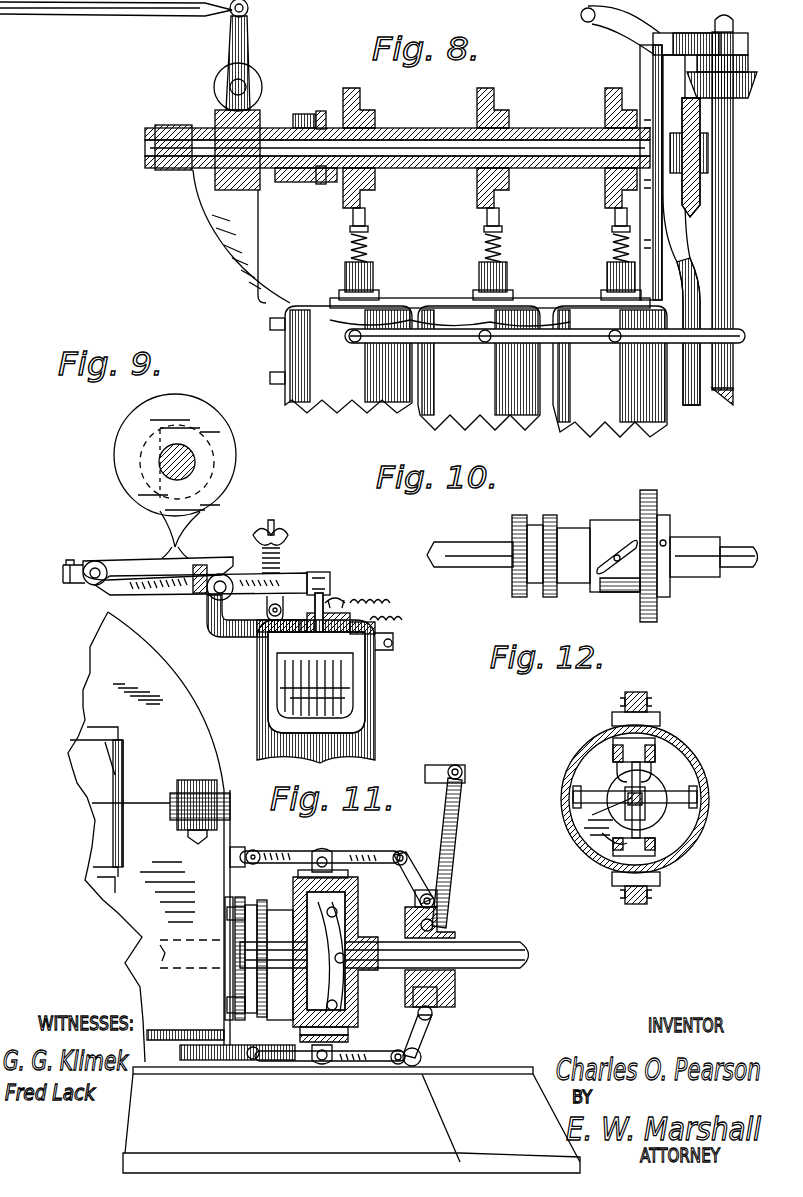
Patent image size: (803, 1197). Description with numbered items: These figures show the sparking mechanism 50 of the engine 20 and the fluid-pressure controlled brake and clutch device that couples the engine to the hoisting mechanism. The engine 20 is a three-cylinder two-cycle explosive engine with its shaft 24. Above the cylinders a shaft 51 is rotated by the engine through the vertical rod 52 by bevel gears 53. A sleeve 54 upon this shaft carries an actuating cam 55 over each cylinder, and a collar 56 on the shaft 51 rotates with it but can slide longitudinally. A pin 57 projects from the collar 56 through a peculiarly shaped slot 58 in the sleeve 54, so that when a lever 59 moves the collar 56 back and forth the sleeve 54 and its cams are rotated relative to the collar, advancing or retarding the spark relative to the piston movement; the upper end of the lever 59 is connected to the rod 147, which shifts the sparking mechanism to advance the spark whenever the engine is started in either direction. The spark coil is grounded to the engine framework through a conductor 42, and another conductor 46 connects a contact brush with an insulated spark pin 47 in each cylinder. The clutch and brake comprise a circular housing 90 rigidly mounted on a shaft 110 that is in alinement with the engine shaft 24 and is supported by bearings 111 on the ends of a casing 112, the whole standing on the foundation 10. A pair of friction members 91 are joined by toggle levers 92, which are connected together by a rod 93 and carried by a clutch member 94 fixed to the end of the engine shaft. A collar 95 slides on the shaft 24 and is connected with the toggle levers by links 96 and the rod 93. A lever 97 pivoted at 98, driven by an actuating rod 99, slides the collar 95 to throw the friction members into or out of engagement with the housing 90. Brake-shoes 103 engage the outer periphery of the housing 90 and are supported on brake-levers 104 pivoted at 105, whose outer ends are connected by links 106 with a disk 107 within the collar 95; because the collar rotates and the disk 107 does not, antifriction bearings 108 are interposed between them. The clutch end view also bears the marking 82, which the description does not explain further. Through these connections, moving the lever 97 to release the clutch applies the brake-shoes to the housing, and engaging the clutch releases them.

In FIG. 11, the foundation 10 is at (480, 1088).
In FIG. 8, the explosive or internal combustion engine 20 is at (305, 335).
In FIG. 11, the shaft of the engine 24 is at (500, 945).
In FIG. 8, the conductor 42 is at (545, 300).
In FIG. 9, the conductor 42 is at (385, 622).
In FIG. 8, the conductor 46 is at (416, 215).
In FIG. 9, the conductor 46 is at (360, 602).
In FIG. 9, the insulated spark pin 47 is at (333, 600).
In FIG. 8, the sparking mechanism 50 is at (312, 74).
In FIG. 8, the shaft 51 is at (540, 140).
In FIG. 10, the shaft 51 is at (445, 548).
In FIG. 8, the vertical rod 52 is at (735, 262).
In FIG. 8, the bevel gears 53 is at (708, 112).
In FIG. 8, the sleeve 54 is at (412, 136).
In FIG. 10, the sleeve 54 is at (705, 545).
In FIG. 8, the actuating cam 55 is at (357, 196).
In FIG. 9, the actuating cam 55 is at (130, 498).
In FIG. 10, the actuating cam 55 is at (656, 520).
In FIG. 8, the collar 56 is at (273, 172).
In FIG. 10, the collar 56 is at (540, 548).
In FIG. 8, the pin 57 is at (321, 111).
In FIG. 10, the pin 57 is at (610, 540).
In FIG. 8, the slot 58 is at (303, 114).
In FIG. 10, the slot 58 is at (598, 572).
In FIG. 8, the lever 59 is at (232, 42).
In FIG. 12, the shaft 82 is at (620, 840).
In FIG. 12, the circular housing 90 is at (580, 756).
In FIG. 11, the circular housing 90 is at (298, 882).
In FIG. 12, the friction members 91 is at (655, 790).
In FIG. 11, the friction members 91 is at (345, 900).
In FIG. 12, the toggle levers 92 is at (622, 798).
In FIG. 11, the toggle levers 92 is at (325, 957).
In FIG. 12, the rod 93 is at (595, 812).
In FIG. 11, the rod 93 is at (360, 985).
In FIG. 12, the clutch member 94 is at (667, 828).
In FIG. 11, the clutch member 94 is at (350, 920).
In FIG. 11, the collar 95 is at (455, 985).
In FIG. 12, the links 96 is at (578, 806).
In FIG. 11, the links 96 is at (372, 970).
In FIG. 11, the lever 97 is at (443, 828).
In FIG. 11, the pivot 98 is at (422, 1057).
In FIG. 11, the actuating rod 99 is at (436, 765).
In FIG. 11, the brake-shoes 103 is at (315, 855).
In FIG. 11, the brake-levers 104 is at (372, 846).
In FIG. 11, the pivot 105 is at (253, 850).
In FIG. 11, the links 106 is at (410, 872).
In FIG. 11, the disk 107 is at (438, 902).
In FIG. 11, the antifriction bearings 108 is at (440, 922).
In FIG. 11, the shaft 110 is at (300, 975).
In FIG. 11, the bearings 111 is at (243, 905).
In FIG. 11, the casing 112 is at (185, 765).
In FIG. 8, the rod 147 is at (108, 9).